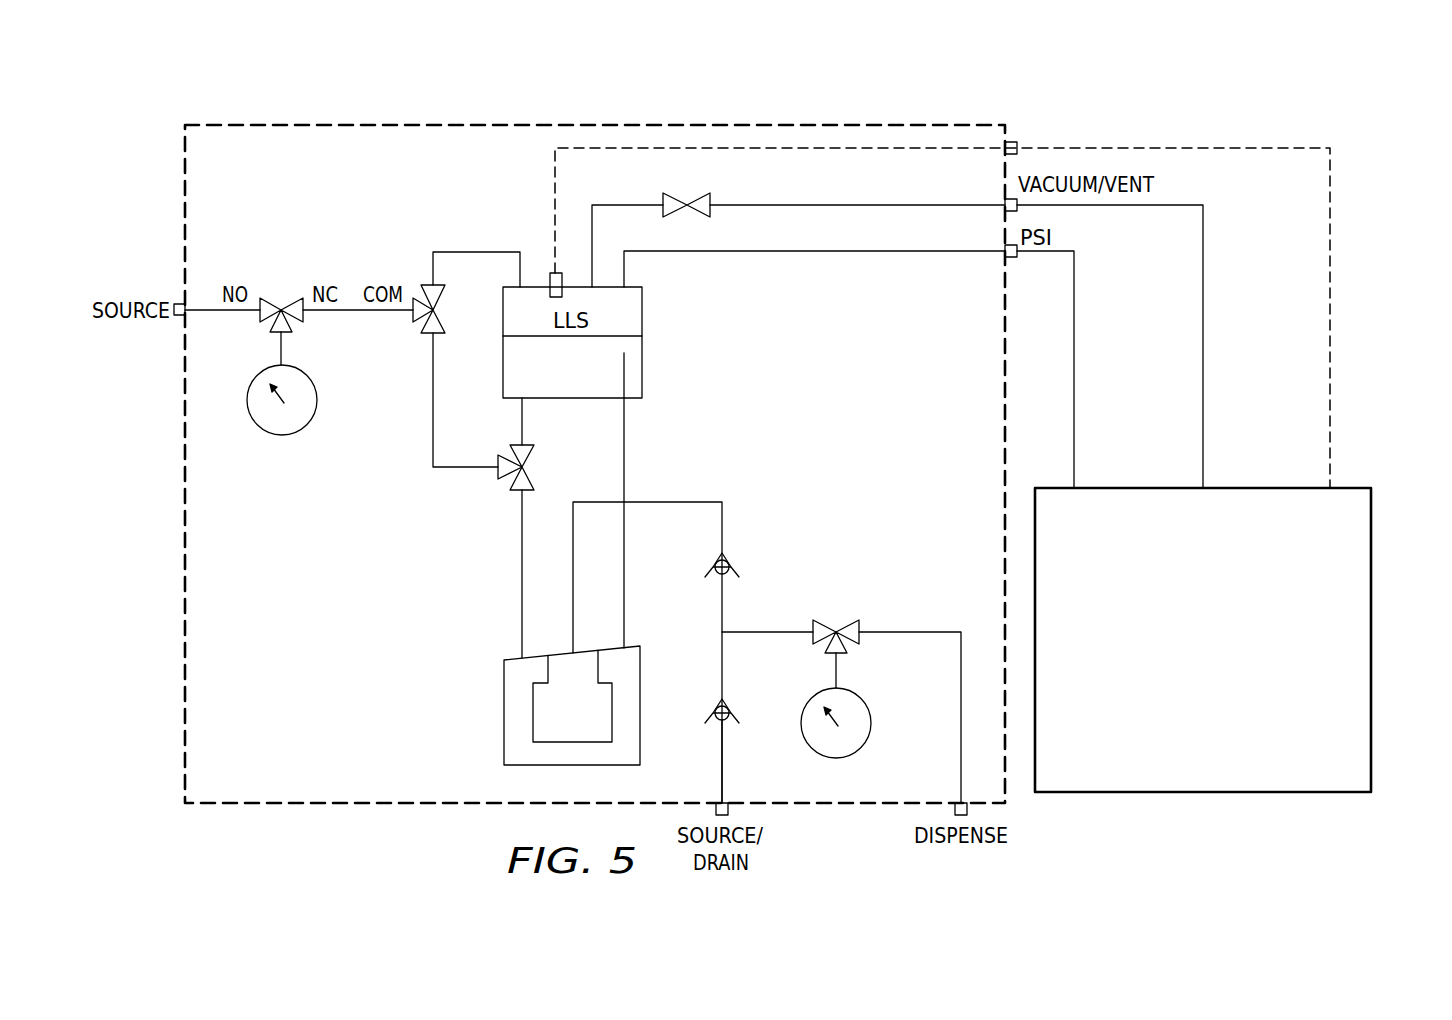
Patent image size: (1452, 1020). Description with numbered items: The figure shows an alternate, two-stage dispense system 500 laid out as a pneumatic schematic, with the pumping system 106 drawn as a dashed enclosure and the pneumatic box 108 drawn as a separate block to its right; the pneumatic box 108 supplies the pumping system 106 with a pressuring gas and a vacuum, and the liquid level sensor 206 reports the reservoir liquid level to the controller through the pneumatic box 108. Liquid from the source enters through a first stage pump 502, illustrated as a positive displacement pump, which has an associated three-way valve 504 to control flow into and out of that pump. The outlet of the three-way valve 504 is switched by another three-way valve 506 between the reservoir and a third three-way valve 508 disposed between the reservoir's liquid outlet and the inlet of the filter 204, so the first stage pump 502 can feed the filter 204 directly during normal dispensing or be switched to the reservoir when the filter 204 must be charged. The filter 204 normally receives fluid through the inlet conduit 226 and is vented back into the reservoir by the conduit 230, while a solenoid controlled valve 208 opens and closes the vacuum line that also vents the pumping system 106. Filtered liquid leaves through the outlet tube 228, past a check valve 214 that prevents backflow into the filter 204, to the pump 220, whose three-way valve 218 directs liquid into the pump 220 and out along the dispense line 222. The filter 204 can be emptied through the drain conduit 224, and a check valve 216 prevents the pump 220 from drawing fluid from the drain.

The two-stage dispense system 500 is at (833, 84).
The pumping system 106 is at (590, 125).
The pneumatic box 108 is at (1371, 665).
The first stage pump 502 is at (280, 297).
The three-way valve 504 is at (280, 436).
The three-way valve 506 is at (428, 338).
The third three-way valve 508 is at (498, 476).
The liquid level sensor 206 is at (548, 282).
The solenoid controlled valve 208 is at (710, 209).
The outlet tube 228 is at (678, 498).
The conduit 230 is at (624, 520).
The check valve 214 is at (732, 563).
The check valve 216 is at (713, 708).
The three-way valve 218 is at (833, 618).
The pump 220 is at (866, 740).
The dispense line 222 is at (961, 690).
The drain conduit 224 is at (724, 752).
The inlet conduit 226 is at (520, 585).
The filter 204 is at (504, 708).